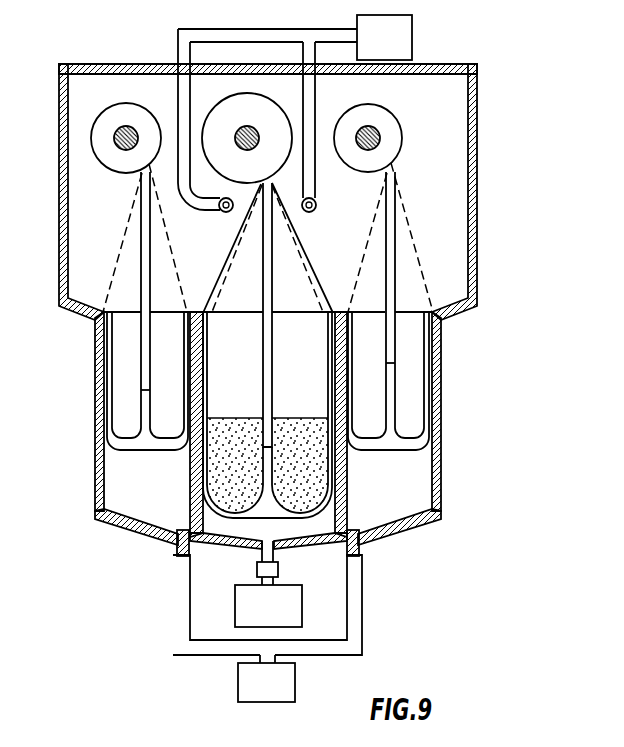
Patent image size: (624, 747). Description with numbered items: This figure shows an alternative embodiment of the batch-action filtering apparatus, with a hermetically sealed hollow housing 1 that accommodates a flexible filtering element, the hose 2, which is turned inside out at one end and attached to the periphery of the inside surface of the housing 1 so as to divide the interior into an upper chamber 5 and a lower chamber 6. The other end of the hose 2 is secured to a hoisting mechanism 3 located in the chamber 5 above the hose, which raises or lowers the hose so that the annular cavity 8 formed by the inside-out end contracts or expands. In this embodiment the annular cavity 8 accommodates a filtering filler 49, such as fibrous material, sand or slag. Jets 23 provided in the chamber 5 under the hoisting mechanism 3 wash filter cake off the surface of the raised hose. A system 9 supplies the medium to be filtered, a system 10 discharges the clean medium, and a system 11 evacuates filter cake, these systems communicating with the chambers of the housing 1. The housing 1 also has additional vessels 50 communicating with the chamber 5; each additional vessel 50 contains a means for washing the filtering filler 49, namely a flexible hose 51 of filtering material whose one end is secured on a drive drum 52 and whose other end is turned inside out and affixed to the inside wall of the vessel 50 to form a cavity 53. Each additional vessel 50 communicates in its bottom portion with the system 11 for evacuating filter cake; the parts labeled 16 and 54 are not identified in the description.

The housing 1 is at (120, 63).
The filtering element 2 is at (370, 536).
The hoisting mechanism 3 is at (268, 93).
The upper chamber 5 is at (430, 238).
The lower chamber 6 is at (226, 537).
The annular cavity 8 is at (343, 342).
The system for supplying the medium to be filtered 9 is at (403, 42).
The system for discharging the clean medium 10 is at (293, 612).
The system for evacuating filter cake 11 is at (245, 682).
The roll of strip material 16 is at (222, 108).
The jets 23 is at (317, 204).
The filtering filler 49 is at (318, 473).
The additional vessel 50 is at (115, 487).
The flexible hose 51 is at (104, 389).
The drive drum 52 is at (118, 159).
The cavity 53 is at (117, 340).
The collecting chamber 54 is at (356, 609).